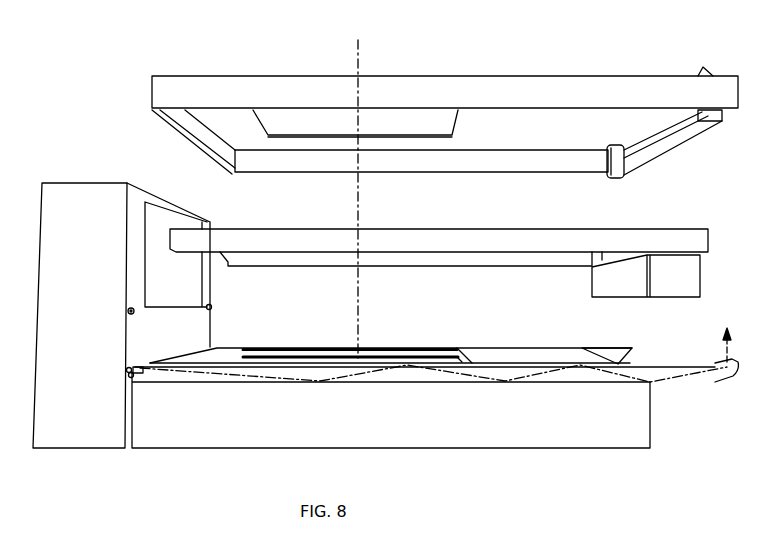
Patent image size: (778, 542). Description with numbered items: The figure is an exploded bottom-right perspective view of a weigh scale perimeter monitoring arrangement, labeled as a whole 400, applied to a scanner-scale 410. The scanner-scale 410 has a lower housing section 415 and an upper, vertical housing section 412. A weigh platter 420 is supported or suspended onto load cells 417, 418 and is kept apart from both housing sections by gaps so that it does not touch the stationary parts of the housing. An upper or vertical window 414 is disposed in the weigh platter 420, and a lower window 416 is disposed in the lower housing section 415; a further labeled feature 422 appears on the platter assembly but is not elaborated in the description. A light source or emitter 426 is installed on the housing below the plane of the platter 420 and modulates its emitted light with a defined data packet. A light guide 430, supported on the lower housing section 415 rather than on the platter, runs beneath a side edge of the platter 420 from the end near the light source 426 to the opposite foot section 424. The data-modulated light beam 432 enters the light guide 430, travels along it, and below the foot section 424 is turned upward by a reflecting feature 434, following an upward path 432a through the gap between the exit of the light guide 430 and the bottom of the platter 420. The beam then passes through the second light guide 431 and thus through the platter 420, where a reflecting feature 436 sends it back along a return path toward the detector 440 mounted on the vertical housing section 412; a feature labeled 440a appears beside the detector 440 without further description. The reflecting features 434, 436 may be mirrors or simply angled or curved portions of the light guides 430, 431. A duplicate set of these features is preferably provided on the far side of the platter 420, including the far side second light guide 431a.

The lighting assembly 400 is at (100, 95).
The scanner-scale 410 is at (83, 180).
The upper housing section 412 is at (72, 430).
The upper window 414 is at (157, 220).
The lower housing section 415 is at (228, 436).
The lower window 416 is at (383, 348).
The load cell 417 is at (383, 243).
The load cell 418 is at (607, 287).
The weigh platter 420 is at (207, 75).
The recess 422 is at (337, 120).
The foot section 424 is at (672, 142).
The light source 426 is at (126, 368).
The light guide 430 is at (376, 385).
The second light guide 431 is at (706, 125).
The far side second light guide 431a is at (614, 180).
The data-modulated light beam 432 is at (192, 370).
The upward path 432a is at (720, 361).
The reflecting feature 434 is at (735, 366).
The reflecting feature 436 is at (709, 68).
The detector 440 is at (130, 308).
The fastener 440a is at (212, 306).